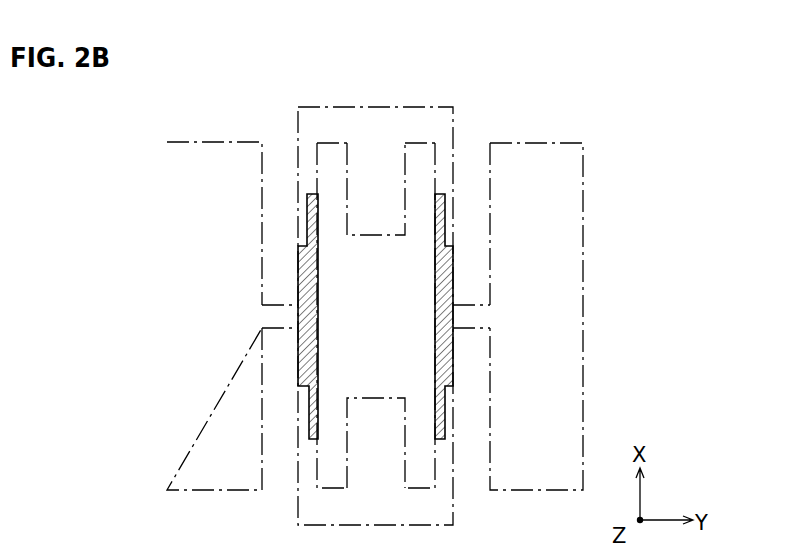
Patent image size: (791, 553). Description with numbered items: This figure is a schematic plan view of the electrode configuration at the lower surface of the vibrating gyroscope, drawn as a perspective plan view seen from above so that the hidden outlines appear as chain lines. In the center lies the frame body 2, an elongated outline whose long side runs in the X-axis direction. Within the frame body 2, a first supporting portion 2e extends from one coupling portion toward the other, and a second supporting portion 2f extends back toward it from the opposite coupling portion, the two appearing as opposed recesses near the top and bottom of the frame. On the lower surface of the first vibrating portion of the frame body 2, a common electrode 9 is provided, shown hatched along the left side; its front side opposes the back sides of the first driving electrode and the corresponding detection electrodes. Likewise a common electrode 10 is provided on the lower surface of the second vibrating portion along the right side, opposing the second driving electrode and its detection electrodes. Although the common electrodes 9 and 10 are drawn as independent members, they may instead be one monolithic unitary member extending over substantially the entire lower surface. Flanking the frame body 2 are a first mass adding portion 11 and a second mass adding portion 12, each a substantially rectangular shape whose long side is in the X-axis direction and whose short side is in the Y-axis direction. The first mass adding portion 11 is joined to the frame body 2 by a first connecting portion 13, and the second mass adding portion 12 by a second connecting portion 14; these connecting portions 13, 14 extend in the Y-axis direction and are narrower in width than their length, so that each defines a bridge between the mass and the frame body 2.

The frame body 2 is at (316, 107).
The first supporting portion 2e is at (362, 235).
The second supporting portion 2f is at (385, 398).
The common electrode 9 is at (298, 262).
The common electrode 10 is at (453, 272).
The first mass adding portion 11 is at (167, 162).
The second mass adding portion 12 is at (573, 143).
The first connecting portion 13 is at (282, 330).
The second connecting portion 14 is at (476, 330).